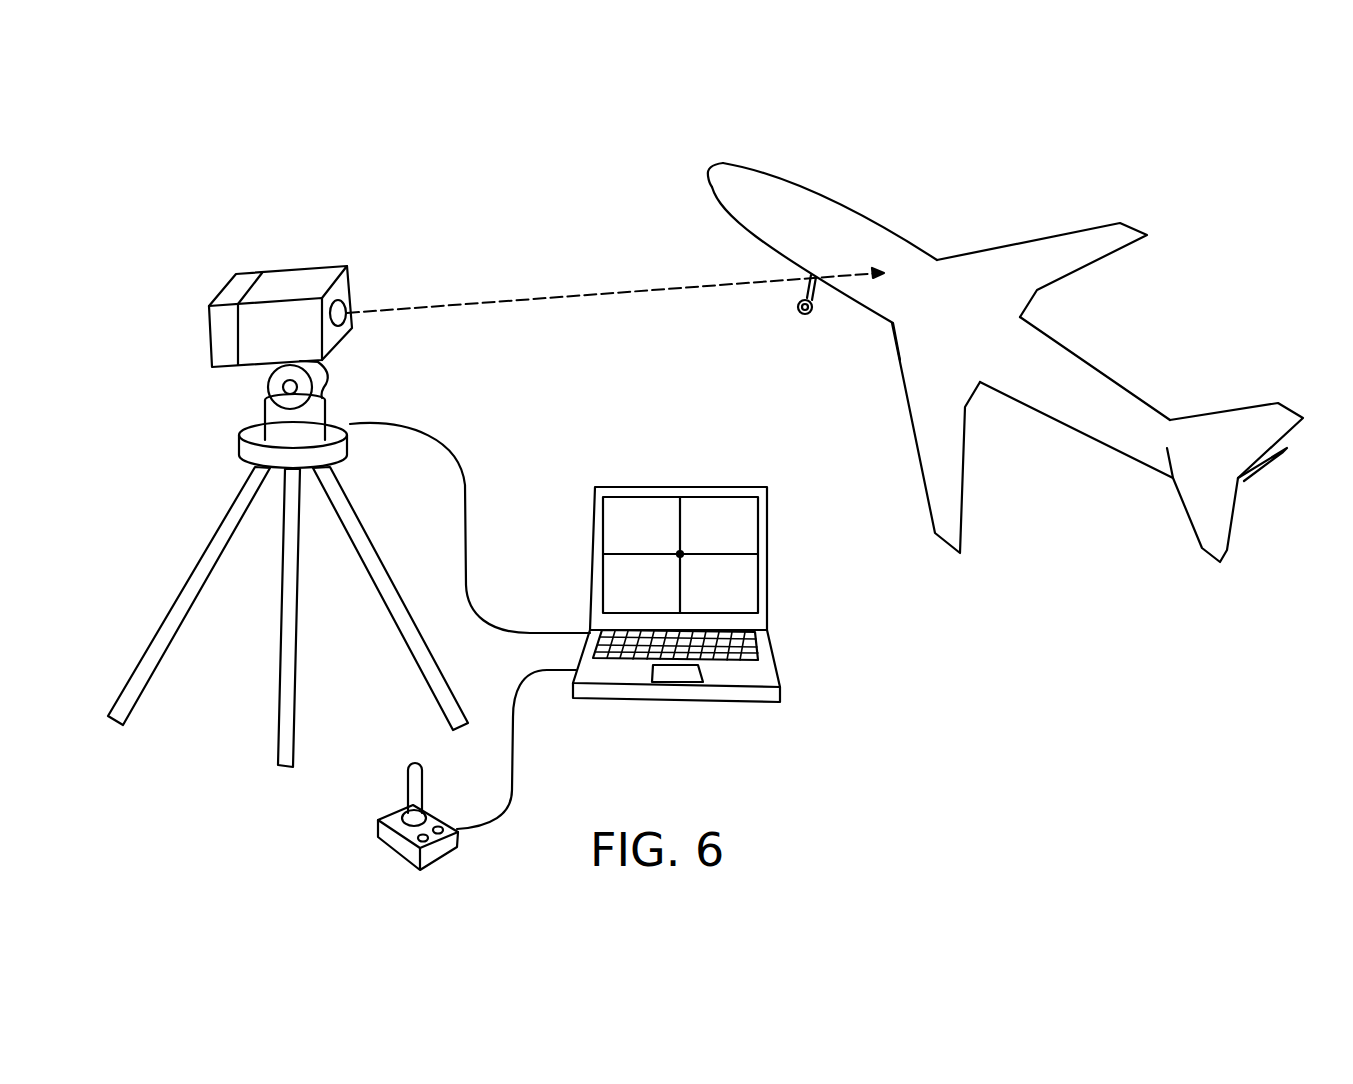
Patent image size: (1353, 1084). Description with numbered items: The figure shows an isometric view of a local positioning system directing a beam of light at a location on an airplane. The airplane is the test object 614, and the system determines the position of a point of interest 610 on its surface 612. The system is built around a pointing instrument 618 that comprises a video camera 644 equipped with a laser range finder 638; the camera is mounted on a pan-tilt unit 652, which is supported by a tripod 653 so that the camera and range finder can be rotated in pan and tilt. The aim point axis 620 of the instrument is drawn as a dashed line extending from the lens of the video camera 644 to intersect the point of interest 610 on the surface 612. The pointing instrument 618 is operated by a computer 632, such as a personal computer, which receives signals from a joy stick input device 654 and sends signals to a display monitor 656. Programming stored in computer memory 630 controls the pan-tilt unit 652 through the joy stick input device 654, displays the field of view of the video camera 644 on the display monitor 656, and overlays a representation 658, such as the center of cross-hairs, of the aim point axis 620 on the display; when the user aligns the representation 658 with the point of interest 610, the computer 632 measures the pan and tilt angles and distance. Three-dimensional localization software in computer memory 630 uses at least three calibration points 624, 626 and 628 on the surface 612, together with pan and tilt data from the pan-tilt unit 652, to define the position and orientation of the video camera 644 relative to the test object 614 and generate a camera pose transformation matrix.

The point of interest 610 is at (882, 273).
The surface 612 is at (1063, 427).
The test object 614 is at (1152, 310).
The pointing instrument 618 is at (263, 253).
The aim point axis 620 is at (605, 295).
The calibration point 624 is at (782, 237).
The calibration point 626 is at (747, 190).
The calibration point 628 is at (803, 200).
The computer memory 630 is at (770, 640).
The computer 632 is at (802, 703).
The laser range finder 638 is at (226, 288).
The video camera 644 is at (317, 268).
The pan-tilt unit 652 is at (330, 377).
The tripod 653 is at (218, 533).
The joy stick input device 654 is at (378, 823).
The display monitor 656 is at (713, 487).
The representation 658 is at (678, 553).